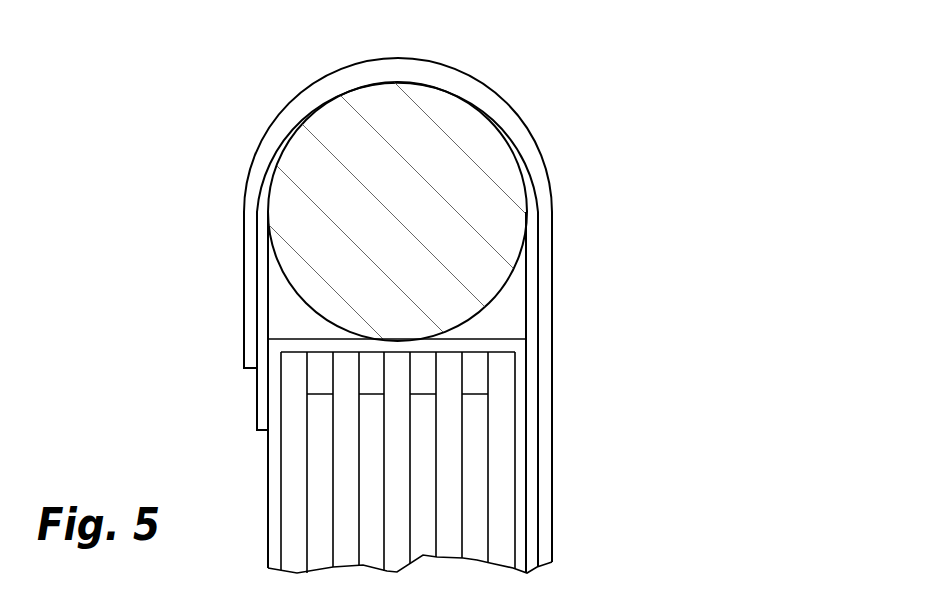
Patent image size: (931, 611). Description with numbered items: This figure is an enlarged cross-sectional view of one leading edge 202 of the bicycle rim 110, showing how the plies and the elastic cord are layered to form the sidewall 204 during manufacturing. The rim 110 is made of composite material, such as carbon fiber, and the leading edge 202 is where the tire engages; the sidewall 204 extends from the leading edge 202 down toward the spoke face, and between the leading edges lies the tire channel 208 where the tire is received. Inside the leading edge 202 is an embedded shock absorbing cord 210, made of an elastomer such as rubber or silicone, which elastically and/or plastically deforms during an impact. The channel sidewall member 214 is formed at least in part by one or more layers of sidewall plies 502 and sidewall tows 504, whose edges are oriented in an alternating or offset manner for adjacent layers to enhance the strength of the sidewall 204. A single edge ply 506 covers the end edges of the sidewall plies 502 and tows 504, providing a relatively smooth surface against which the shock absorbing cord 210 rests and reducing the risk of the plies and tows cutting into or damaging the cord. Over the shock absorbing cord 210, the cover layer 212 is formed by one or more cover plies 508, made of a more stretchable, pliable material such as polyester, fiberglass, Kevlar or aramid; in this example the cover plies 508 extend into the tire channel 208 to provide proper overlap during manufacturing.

The rim 110 is at (520, 513).
The leading edge 202 is at (268, 358).
The sidewall 204 is at (549, 542).
The tire channel 208 is at (679, 311).
The shock absorbing cord 210 is at (483, 135).
The cover layer 212 is at (482, 72).
The channel sidewall member 214 is at (282, 467).
The sidewall plies 502 is at (292, 548).
The sidewall tows 504 is at (320, 378).
The edge ply 506 is at (490, 338).
The cover plies 508 is at (285, 140).